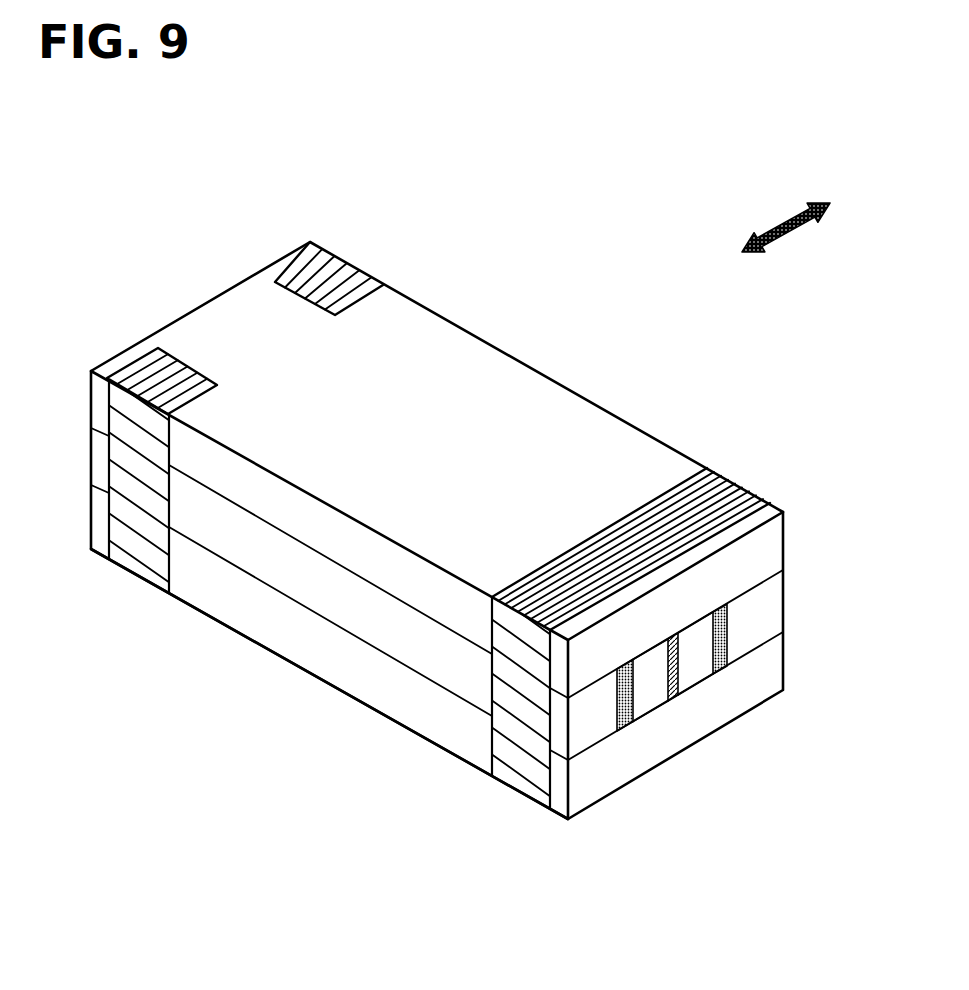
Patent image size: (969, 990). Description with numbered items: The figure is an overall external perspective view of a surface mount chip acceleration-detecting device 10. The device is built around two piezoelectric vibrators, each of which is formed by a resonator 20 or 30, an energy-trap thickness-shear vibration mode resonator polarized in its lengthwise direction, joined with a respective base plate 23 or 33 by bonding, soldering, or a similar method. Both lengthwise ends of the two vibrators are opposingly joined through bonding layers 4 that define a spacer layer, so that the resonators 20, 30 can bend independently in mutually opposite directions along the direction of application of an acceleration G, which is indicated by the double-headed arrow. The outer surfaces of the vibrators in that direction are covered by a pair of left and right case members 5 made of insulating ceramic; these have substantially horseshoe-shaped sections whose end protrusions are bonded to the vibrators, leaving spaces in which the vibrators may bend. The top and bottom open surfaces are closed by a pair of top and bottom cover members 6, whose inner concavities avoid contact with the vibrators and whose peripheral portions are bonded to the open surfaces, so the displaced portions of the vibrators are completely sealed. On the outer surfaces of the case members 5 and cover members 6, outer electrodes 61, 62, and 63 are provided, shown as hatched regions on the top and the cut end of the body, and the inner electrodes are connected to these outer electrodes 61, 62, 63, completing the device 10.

The acceleration-detecting device 10 is at (585, 211).
The cover member 6 is at (533, 408).
The case member 5 is at (252, 565).
The outer electrode 61 is at (679, 503).
The outer electrode 62 is at (350, 264).
The outer electrode 63 is at (138, 370).
The resonator 30 is at (627, 724).
The base plate 23 is at (682, 692).
The resonator 20 is at (727, 638).
The base plate 33 is at (645, 702).
The bonding layer 4 is at (700, 669).
The acceleration G is at (786, 219).